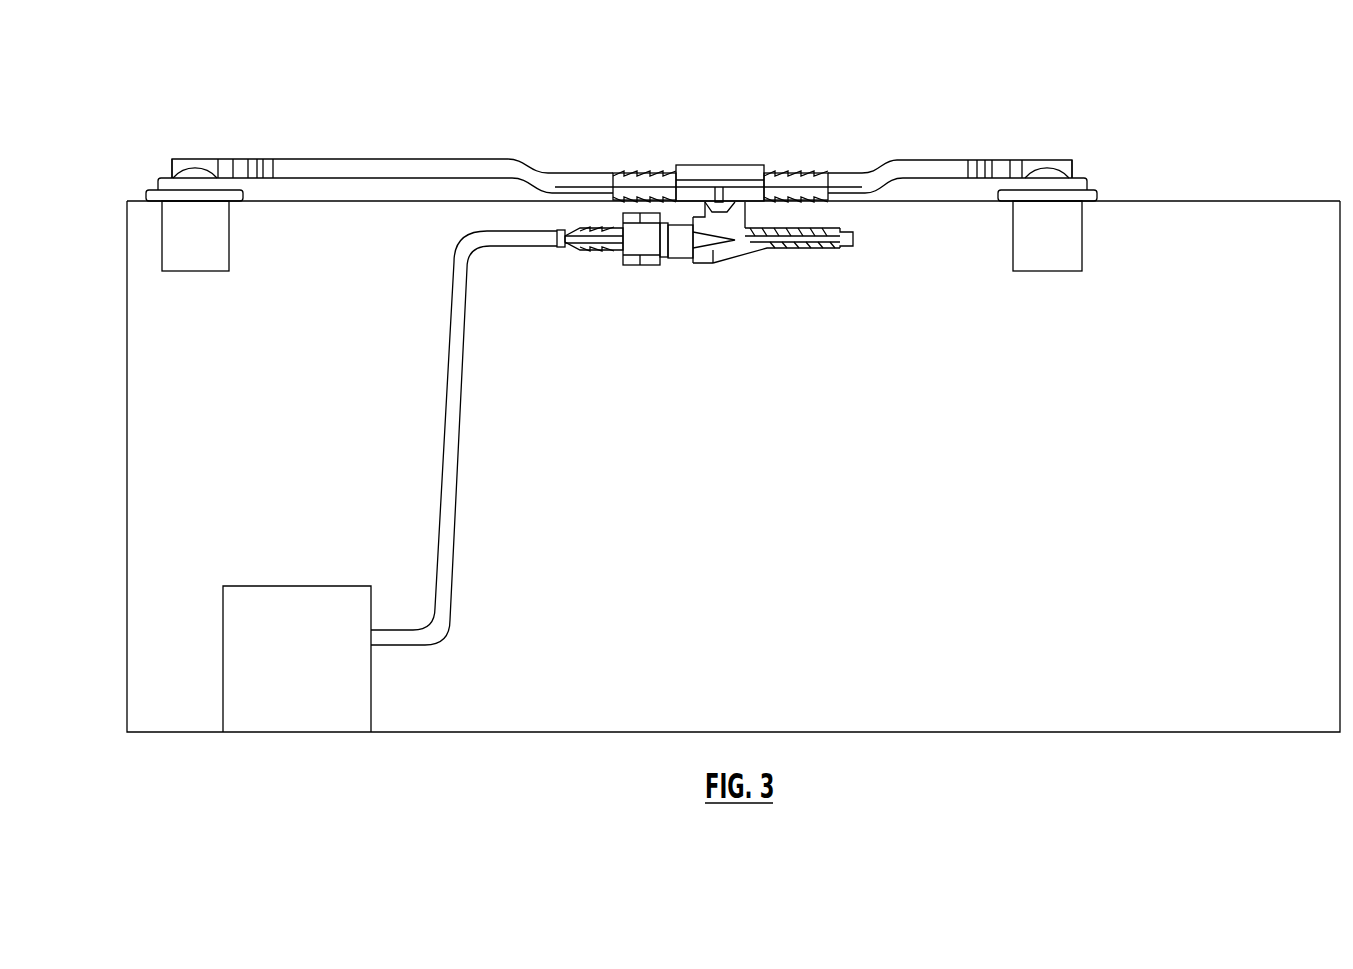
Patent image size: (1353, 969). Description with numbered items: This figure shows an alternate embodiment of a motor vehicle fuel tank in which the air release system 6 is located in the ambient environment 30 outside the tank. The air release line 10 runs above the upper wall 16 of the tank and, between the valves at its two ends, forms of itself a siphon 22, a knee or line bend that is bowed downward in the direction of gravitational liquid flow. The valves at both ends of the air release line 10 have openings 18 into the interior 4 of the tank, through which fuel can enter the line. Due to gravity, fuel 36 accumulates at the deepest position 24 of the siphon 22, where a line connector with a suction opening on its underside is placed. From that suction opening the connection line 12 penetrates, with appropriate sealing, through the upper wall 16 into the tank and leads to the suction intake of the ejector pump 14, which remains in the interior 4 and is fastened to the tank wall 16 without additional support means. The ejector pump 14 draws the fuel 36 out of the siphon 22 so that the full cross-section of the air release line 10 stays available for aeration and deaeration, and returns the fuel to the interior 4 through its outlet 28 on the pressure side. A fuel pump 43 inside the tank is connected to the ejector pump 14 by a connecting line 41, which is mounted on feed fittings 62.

The interior of the tank 4 is at (1098, 435).
The air release system 6 is at (298, 133).
The air release line 10 is at (412, 166).
The connection line 12 is at (660, 250).
The ejector pump 14 is at (755, 250).
The upper wall of the tank 16 is at (1243, 201).
The opening 18 is at (154, 243).
The siphon 22 is at (725, 160).
The deepest position 24 is at (700, 177).
The outlet 28 is at (835, 246).
The ambient environment 30 is at (915, 101).
The fuel 36 is at (678, 176).
The connecting line 41 is at (458, 465).
The fuel pump 43 is at (298, 688).
The feed fittings 62 is at (590, 250).